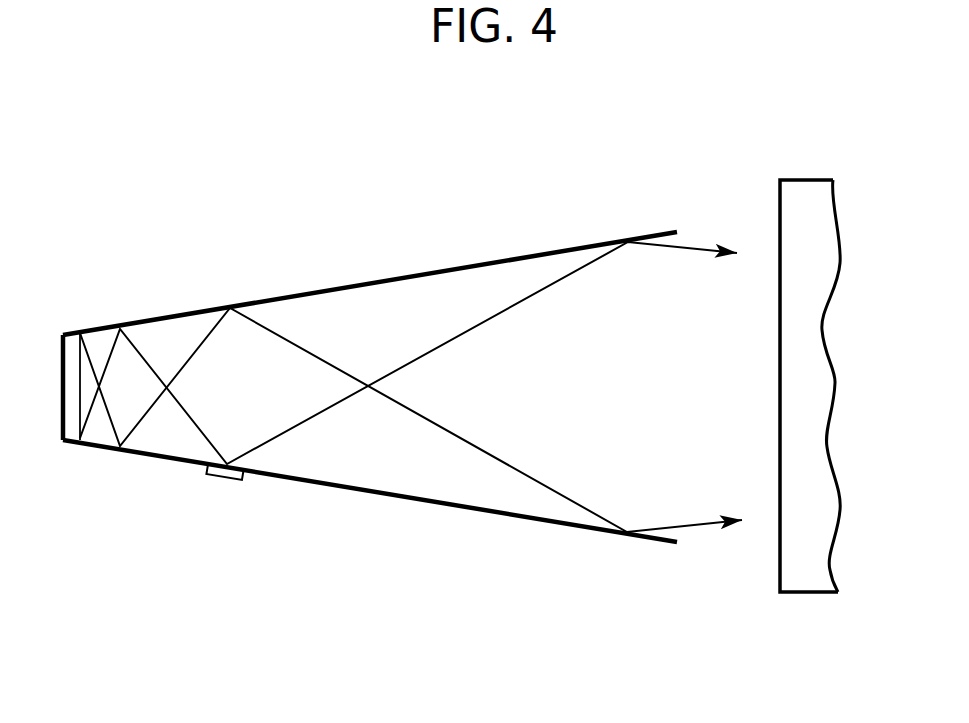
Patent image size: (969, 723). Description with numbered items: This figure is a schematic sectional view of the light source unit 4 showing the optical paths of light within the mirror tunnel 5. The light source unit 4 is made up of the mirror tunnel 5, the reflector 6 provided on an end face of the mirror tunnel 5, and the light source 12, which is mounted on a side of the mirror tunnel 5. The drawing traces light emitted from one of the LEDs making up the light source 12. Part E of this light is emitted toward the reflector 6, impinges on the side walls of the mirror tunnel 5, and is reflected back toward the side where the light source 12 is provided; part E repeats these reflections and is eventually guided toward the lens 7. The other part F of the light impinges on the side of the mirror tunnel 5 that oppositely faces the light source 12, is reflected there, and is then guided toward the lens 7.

The light source unit 4 is at (579, 166).
The mirror tunnel 5 is at (478, 264).
The reflector 6 is at (73, 333).
The lens 7 is at (812, 179).
The light source 12 is at (222, 480).
The part E of light E is at (208, 436).
The part F of light F is at (516, 303).